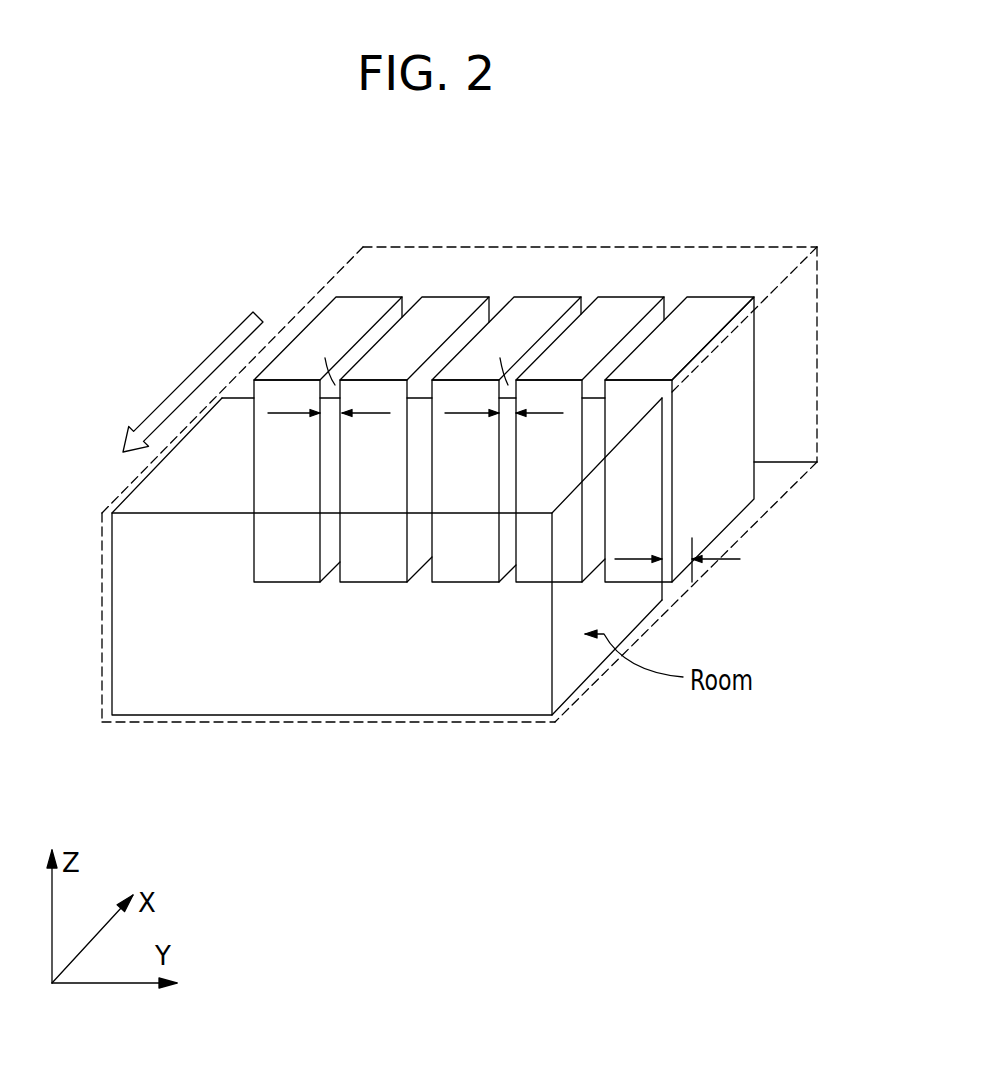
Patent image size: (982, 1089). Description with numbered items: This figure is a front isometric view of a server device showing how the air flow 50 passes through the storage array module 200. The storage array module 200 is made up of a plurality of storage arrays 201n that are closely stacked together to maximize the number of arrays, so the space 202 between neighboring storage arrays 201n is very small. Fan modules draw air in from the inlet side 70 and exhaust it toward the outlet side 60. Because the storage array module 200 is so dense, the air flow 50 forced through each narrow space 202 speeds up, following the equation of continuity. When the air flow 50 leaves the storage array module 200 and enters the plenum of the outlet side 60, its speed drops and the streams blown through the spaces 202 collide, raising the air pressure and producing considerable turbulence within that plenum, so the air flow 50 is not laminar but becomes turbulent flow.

The air flow 50 is at (222, 343).
The outlet side 60 is at (520, 689).
The inlet side 70 is at (772, 282).
The storage array module 200 is at (447, 297).
The storage arrays 201n is at (742, 380).
The space 202 is at (676, 300).